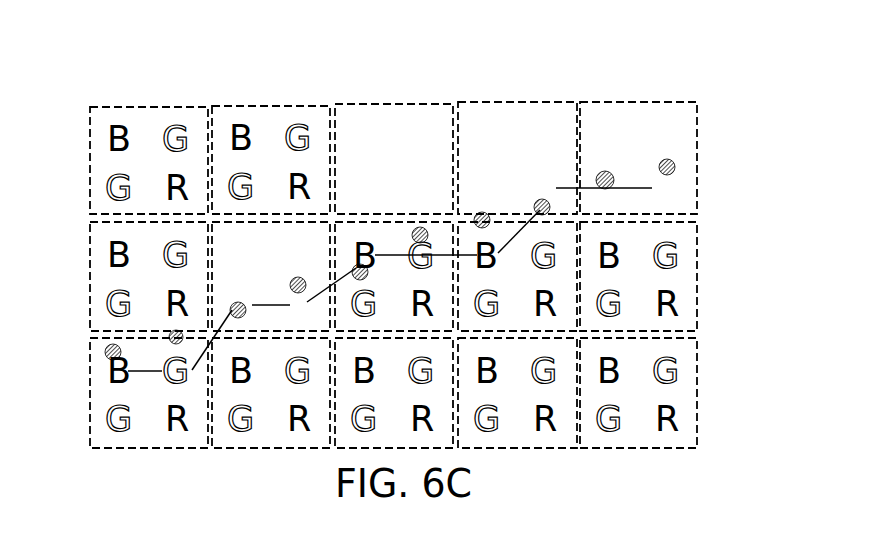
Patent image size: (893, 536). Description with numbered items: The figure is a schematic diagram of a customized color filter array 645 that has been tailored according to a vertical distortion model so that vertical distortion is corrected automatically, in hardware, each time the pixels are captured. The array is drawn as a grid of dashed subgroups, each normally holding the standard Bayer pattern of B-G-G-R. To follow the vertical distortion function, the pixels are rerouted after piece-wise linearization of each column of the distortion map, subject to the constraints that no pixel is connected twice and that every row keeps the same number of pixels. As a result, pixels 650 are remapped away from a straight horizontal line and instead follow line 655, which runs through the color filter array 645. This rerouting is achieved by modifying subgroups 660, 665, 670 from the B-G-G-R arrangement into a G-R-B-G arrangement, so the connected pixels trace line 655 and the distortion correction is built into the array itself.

The color filter array 645 is at (342, 102).
The pixels 650 is at (112, 346).
The line 655 is at (522, 223).
The subgroup 660 is at (512, 102).
The subgroup 665 is at (658, 101).
The subgroup 670 is at (268, 222).